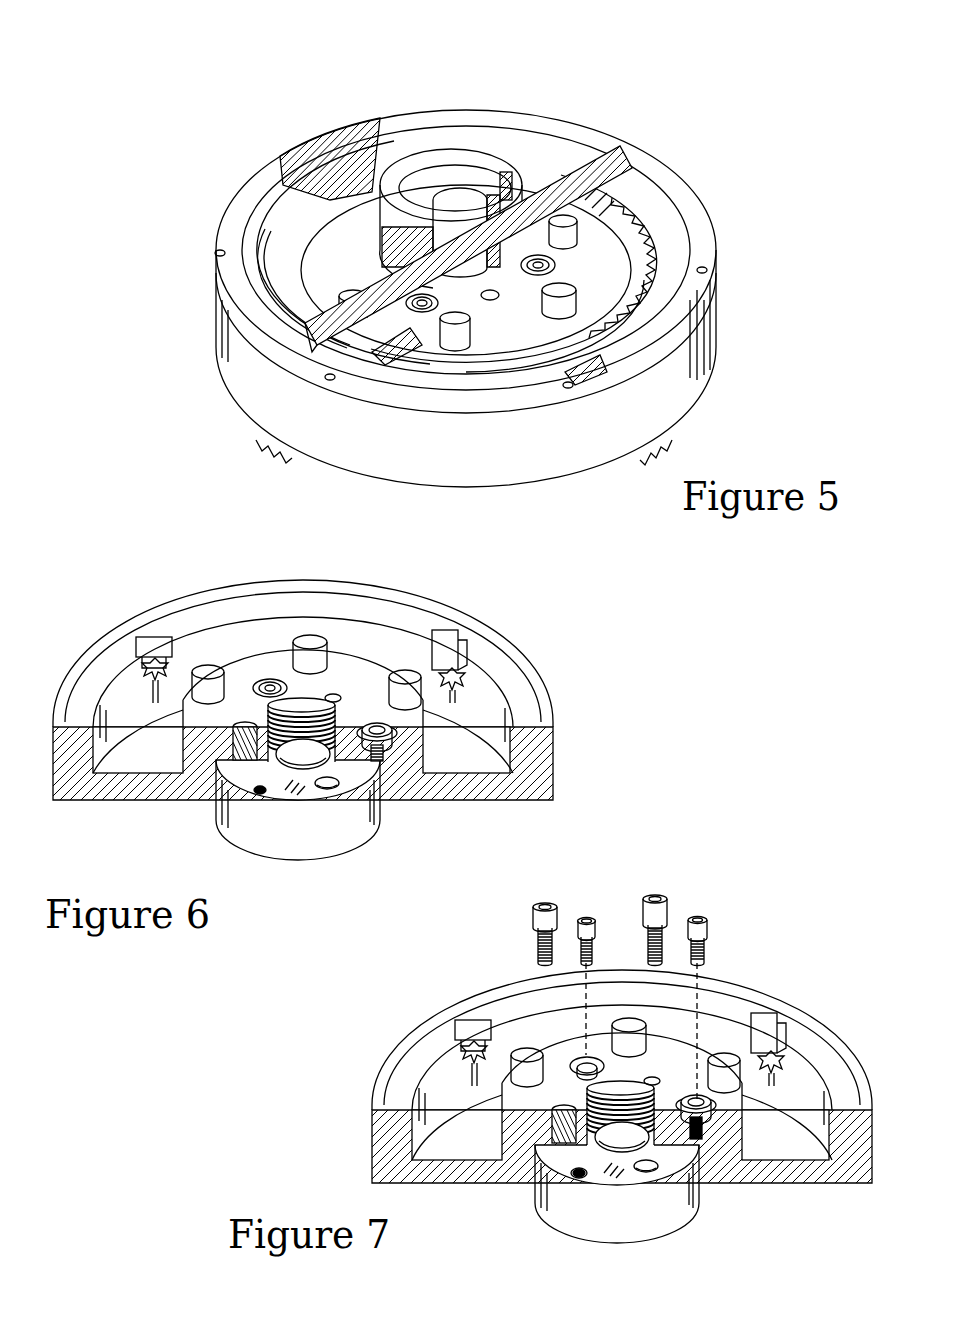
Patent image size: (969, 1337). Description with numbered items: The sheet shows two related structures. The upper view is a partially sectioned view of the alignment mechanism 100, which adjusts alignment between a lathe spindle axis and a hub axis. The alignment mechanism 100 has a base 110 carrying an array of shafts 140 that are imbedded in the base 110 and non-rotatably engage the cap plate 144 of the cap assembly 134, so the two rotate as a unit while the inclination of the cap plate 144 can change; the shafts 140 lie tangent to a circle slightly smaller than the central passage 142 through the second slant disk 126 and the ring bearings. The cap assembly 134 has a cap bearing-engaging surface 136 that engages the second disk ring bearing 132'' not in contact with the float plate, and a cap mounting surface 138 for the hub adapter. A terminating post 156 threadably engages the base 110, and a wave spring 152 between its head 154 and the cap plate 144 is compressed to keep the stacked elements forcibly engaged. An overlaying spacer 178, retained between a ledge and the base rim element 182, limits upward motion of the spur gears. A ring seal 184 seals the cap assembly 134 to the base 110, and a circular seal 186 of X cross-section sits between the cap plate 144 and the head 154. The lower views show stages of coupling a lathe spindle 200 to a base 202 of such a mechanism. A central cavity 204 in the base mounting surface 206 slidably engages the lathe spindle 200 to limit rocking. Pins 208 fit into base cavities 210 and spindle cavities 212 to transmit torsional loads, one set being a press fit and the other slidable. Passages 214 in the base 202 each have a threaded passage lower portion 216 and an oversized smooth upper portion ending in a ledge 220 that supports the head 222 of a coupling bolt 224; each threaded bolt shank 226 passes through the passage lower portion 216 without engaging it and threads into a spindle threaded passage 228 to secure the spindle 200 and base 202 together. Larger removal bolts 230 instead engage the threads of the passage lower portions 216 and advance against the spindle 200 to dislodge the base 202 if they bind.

In FIG. 5, the alignment mechanism 100 is at (222, 150).
In FIG. 5, the base 110 is at (717, 297).
In FIG. 5, the second slant disk 126 is at (667, 263).
In FIG. 5, the second disk ring bearing 132'' is at (540, 285).
In FIG. 5, the cap assembly 134 is at (588, 117).
In FIG. 5, the cap bearing-engaging surface 136 is at (320, 377).
In FIG. 5, the cap mounting surface 138 is at (257, 217).
In FIG. 5, the shafts 140 is at (568, 296).
In FIG. 5, the central passage 142 is at (610, 318).
In FIG. 5, the cap plate 144 is at (625, 152).
In FIG. 5, the wave spring 152 is at (425, 253).
In FIG. 5, the head 154 is at (453, 177).
In FIG. 5, the terminating post 156 is at (420, 190).
In FIG. 5, the overlaying spacer 178 is at (613, 193).
In FIG. 5, the base rim element 182 is at (215, 272).
In FIG. 5, the ring seal 184 is at (277, 322).
In FIG. 5, the circular seal 186 is at (503, 177).
In FIG. 6, the lathe spindle 200 is at (303, 865).
In FIG. 7, the lathe spindle 200 is at (693, 1222).
In FIG. 6, the base 202 is at (553, 668).
In FIG. 7, the base 202 is at (358, 1094).
In FIG. 6, the central cavity 204 is at (197, 793).
In FIG. 7, the central cavity 204 is at (533, 1173).
In FIG. 6, the base mounting surface 206 is at (143, 800).
In FIG. 7, the base mounting surface 206 is at (782, 1183).
In FIG. 6, the pins 208 is at (330, 697).
In FIG. 7, the pins 208 is at (651, 1093).
In FIG. 6, the base cavities 210 is at (233, 752).
In FIG. 7, the base cavities 210 is at (548, 1138).
In FIG. 6, the spindle cavities 212 is at (325, 787).
In FIG. 7, the spindle cavities 212 is at (647, 1172).
In FIG. 6, the passages 214 is at (392, 757).
In FIG. 7, the passages 214 is at (567, 1060).
In FIG. 7, the passage lower portion 216 is at (702, 1135).
In FIG. 7, the ledge 220 is at (703, 1104).
In FIG. 7, the head 222 is at (707, 918).
In FIG. 6, the coupling bolts 224 is at (377, 724).
In FIG. 7, the coupling bolts 224 is at (600, 900).
In FIG. 7, the bolt shank 226 is at (707, 937).
In FIG. 7, the spindle threaded passages 228 is at (580, 1180).
In FIG. 7, the removal bolts 230 is at (540, 937).